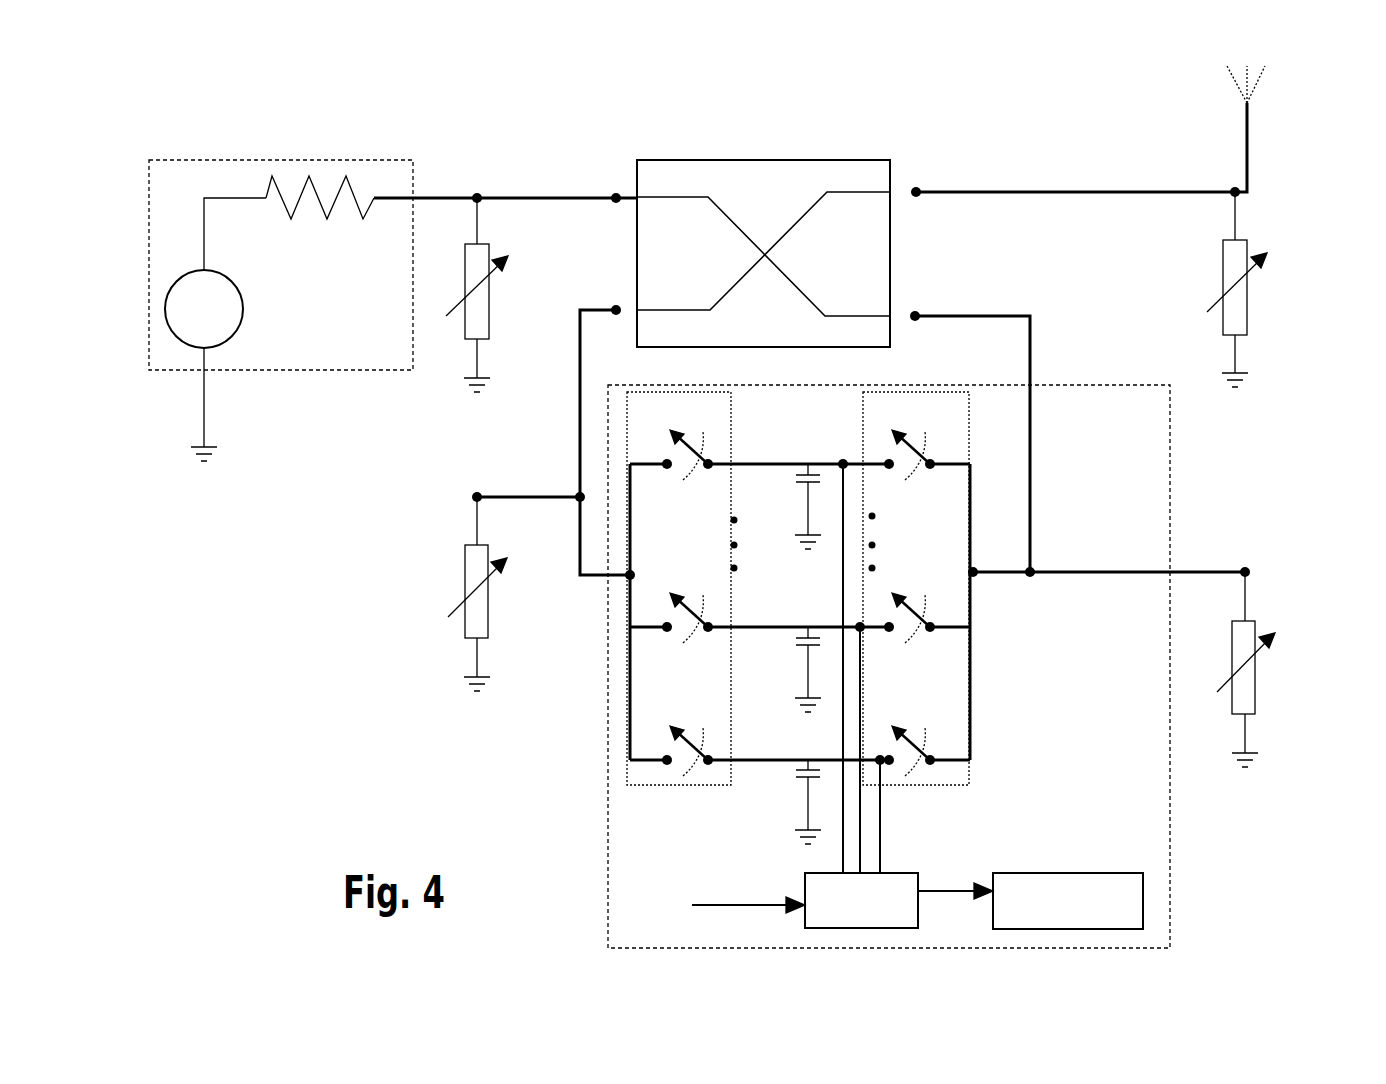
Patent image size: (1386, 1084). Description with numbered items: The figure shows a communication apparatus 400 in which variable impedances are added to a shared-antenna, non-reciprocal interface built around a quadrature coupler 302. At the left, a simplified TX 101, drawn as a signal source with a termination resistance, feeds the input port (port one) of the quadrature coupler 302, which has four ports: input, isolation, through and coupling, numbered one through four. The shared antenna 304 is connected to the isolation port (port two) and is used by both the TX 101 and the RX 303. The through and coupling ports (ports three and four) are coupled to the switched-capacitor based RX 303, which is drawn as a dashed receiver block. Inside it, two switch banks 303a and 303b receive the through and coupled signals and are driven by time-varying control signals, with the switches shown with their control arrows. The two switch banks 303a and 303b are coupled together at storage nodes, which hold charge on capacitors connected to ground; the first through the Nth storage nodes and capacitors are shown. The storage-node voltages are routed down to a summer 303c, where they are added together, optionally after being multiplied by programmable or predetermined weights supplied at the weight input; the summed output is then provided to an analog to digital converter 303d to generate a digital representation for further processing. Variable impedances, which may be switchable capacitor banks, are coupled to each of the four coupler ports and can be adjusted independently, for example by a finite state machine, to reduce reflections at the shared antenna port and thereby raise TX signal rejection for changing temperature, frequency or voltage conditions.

The apparatus 400 is at (181, 134).
The TX 101 is at (298, 371).
The quadrature coupler 302 is at (720, 160).
The shared antenna 304 is at (1247, 103).
The RX 303 is at (1170, 533).
The switch bank 303a is at (732, 607).
The switch bank 303b is at (970, 690).
The summer 303c is at (918, 873).
The analog to digital converter (ADC) 303d is at (1048, 873).